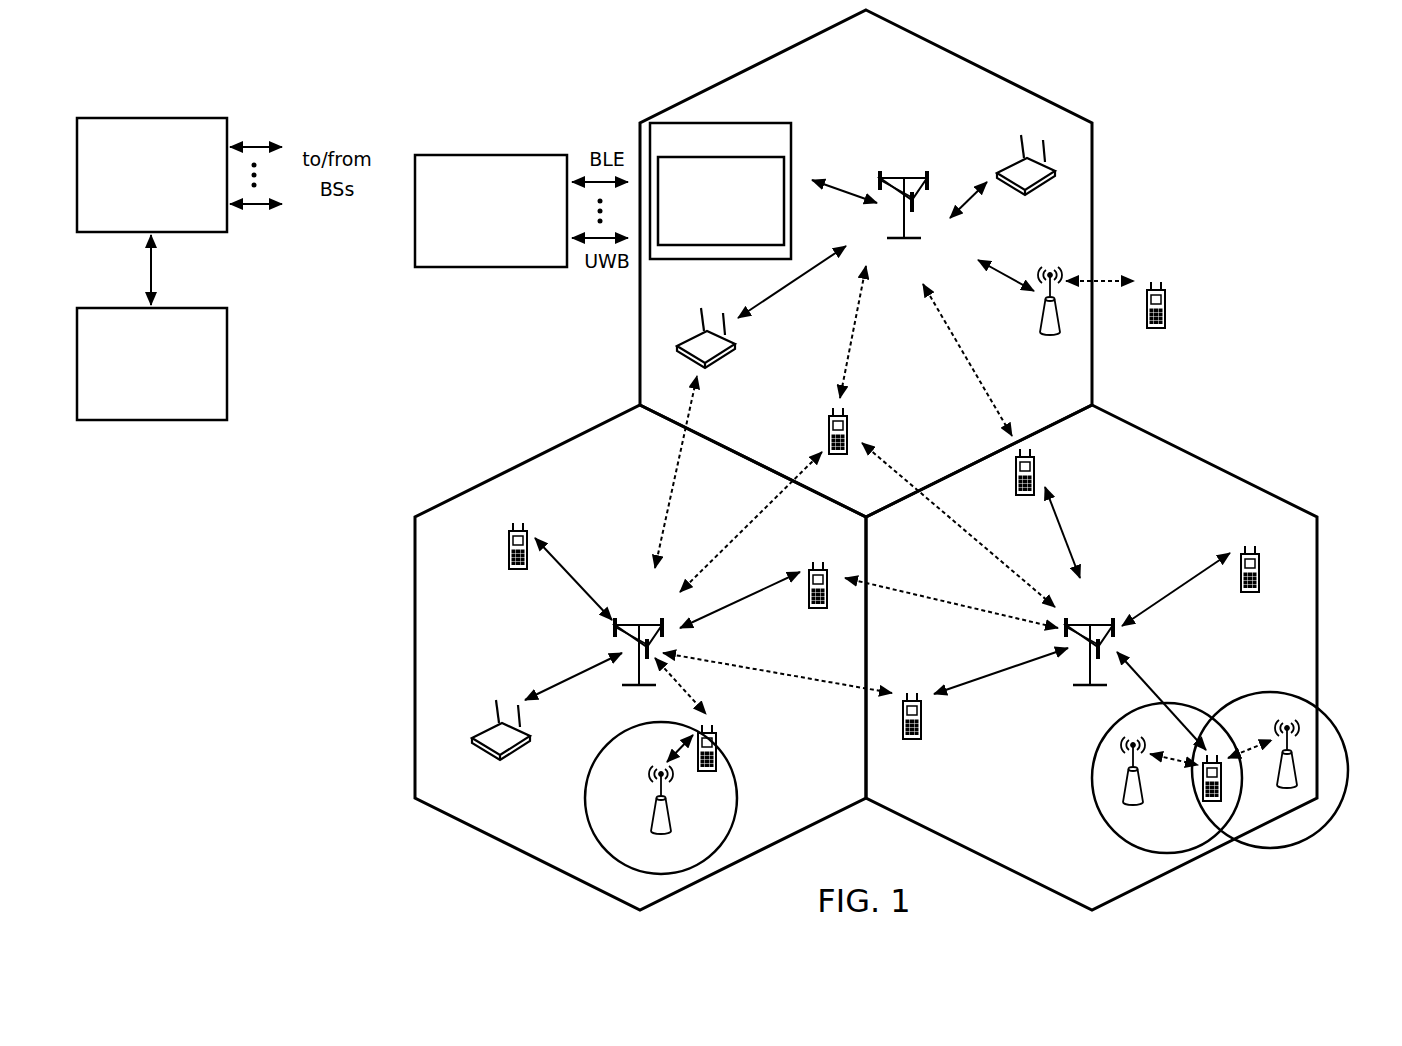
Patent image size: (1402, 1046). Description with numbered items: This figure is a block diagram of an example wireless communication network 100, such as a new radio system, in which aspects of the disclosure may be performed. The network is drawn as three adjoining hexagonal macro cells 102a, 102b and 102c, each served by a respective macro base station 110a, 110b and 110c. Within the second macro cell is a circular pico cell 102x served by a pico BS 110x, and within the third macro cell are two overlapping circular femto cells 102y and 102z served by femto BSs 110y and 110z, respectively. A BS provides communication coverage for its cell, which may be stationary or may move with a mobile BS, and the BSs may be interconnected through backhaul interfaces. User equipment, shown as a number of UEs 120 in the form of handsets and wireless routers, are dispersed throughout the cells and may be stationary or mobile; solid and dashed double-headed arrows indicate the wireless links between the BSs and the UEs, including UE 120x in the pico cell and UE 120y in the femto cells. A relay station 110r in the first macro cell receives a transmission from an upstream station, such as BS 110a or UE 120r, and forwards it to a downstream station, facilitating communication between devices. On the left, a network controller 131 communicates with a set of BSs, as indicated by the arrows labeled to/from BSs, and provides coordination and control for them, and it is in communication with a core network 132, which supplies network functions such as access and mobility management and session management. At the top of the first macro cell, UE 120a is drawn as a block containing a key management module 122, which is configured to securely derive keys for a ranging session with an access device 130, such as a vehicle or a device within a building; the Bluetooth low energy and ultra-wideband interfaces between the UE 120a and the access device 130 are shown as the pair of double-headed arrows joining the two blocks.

The wireless communication network 100 is at (1246, 82).
The macro cell 102a is at (978, 66).
The macro cell 102b is at (528, 458).
The macro cell 102c is at (1202, 457).
The pico cell 102x is at (607, 740).
The femto cell 102y is at (1094, 742).
The femto cell 102z is at (1262, 684).
The macro base station 110a is at (926, 181).
The macro base station 110b is at (637, 621).
The macro base station 110c is at (1090, 621).
The relay station 110r is at (1034, 320).
The pico base station 110x is at (675, 820).
The femto base station 110y is at (1144, 794).
The femto base station 110z is at (1298, 778).
The user equipment 120 is at (1030, 153).
The user equipment 120a is at (777, 125).
The user equipment 120r is at (1167, 318).
The user equipment 120x is at (718, 742).
The user equipment 120y is at (1204, 800).
The key management module 122 is at (786, 160).
The access device 130 is at (482, 155).
The network controller 131 is at (144, 118).
The core network 132 is at (190, 308).